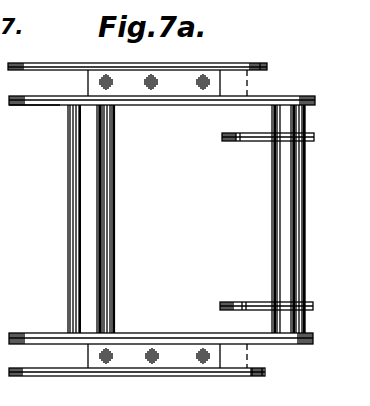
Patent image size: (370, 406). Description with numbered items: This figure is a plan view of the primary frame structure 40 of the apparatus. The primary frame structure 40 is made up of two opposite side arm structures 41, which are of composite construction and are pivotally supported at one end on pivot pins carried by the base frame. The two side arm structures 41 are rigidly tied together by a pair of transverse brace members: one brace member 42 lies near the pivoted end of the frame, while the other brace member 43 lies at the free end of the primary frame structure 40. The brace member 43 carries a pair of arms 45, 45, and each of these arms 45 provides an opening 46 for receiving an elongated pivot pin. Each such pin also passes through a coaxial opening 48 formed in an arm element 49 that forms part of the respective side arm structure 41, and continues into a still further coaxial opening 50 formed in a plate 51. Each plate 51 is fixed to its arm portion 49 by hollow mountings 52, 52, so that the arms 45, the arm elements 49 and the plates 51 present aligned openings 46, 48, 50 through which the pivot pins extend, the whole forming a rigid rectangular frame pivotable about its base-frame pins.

The primary frame structure 40 is at (46, 112).
The side arm structure 41 is at (133, 85).
The transverse brace member 42 is at (78, 261).
The transverse brace member 43 is at (278, 245).
The arm 45 is at (226, 133).
The opening 46 is at (238, 142).
The coaxial opening 48 is at (243, 100).
The arm element 49 is at (280, 97).
The coaxial opening 50 is at (245, 65).
The plate 51 is at (183, 66).
The hollow mounting 52 is at (104, 72).